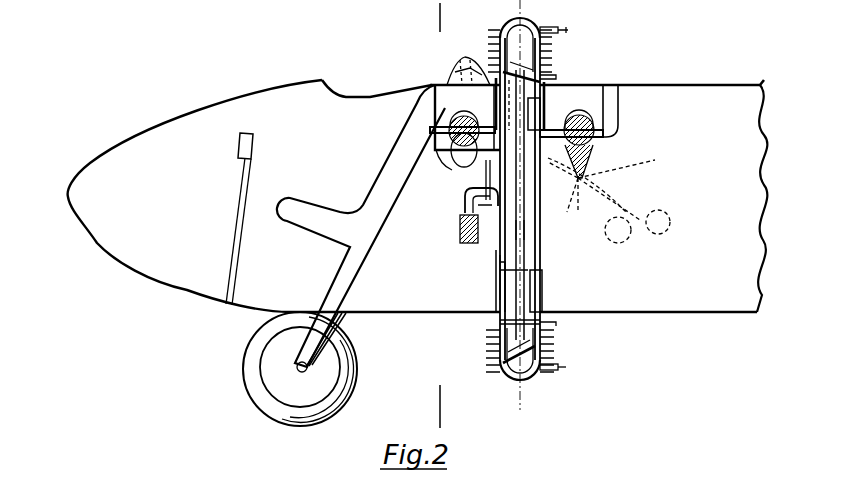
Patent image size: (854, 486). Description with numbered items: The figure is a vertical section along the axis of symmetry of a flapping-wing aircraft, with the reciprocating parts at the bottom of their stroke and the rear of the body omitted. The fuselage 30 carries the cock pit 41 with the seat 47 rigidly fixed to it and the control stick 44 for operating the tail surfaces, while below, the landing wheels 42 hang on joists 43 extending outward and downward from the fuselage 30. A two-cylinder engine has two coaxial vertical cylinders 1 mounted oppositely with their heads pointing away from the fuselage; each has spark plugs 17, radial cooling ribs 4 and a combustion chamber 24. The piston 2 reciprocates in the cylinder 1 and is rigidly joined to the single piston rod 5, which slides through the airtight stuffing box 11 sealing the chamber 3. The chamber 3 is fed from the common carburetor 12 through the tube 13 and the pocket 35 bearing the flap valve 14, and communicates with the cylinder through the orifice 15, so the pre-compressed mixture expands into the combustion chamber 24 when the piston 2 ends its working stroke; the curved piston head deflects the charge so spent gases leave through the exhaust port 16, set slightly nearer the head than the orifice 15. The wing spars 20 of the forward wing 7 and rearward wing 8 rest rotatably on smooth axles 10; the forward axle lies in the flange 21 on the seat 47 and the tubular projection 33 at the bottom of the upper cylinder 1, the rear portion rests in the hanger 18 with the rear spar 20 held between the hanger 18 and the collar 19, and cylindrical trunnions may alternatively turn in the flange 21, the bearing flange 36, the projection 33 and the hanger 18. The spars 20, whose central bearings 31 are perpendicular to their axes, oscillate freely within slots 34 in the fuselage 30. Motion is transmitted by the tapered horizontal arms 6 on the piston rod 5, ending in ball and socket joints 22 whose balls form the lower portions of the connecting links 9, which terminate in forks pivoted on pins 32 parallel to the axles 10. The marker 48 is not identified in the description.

The cylinder 1 is at (505, 23).
The piston 2 is at (505, 66).
The chamber 3 is at (537, 122).
The radial cooling ribs 4 is at (556, 49).
The piston rod 5 is at (525, 226).
The horizontal arms 6 is at (542, 192).
The forward wing 7 is at (470, 64).
The rearward wing 8 is at (615, 192).
The connecting links 9 is at (528, 205).
The axles 10 is at (462, 160).
The stuffing box 11 is at (527, 275).
The carburetor 12 is at (462, 232).
The tube 13 is at (492, 75).
The flap valve 14 is at (473, 193).
The orifice 15 is at (495, 79).
The exhaust port 16 is at (549, 77).
The spark plugs 17 is at (566, 30).
The hanger 18 is at (615, 122).
The collar 19 is at (577, 184).
The wing spars 20 is at (470, 108).
The flange 21 is at (436, 160).
The ball and socket joints 22 is at (598, 180).
The combustion chamber 24 is at (528, 393).
The fuselage 30 is at (722, 85).
The central bearings 31 is at (590, 172).
The pins 32 is at (583, 180).
The tubular projection 33 is at (530, 150).
The slots 34 is at (440, 156).
The pocket 35 is at (465, 199).
The bearing flange 36 is at (483, 180).
The cock pit 41 is at (378, 95).
The landing wheels 42 is at (250, 360).
The joists 43 is at (345, 325).
The control stick 44 is at (240, 182).
The seat 47 is at (340, 210).
The section line 48 is at (438, 18).